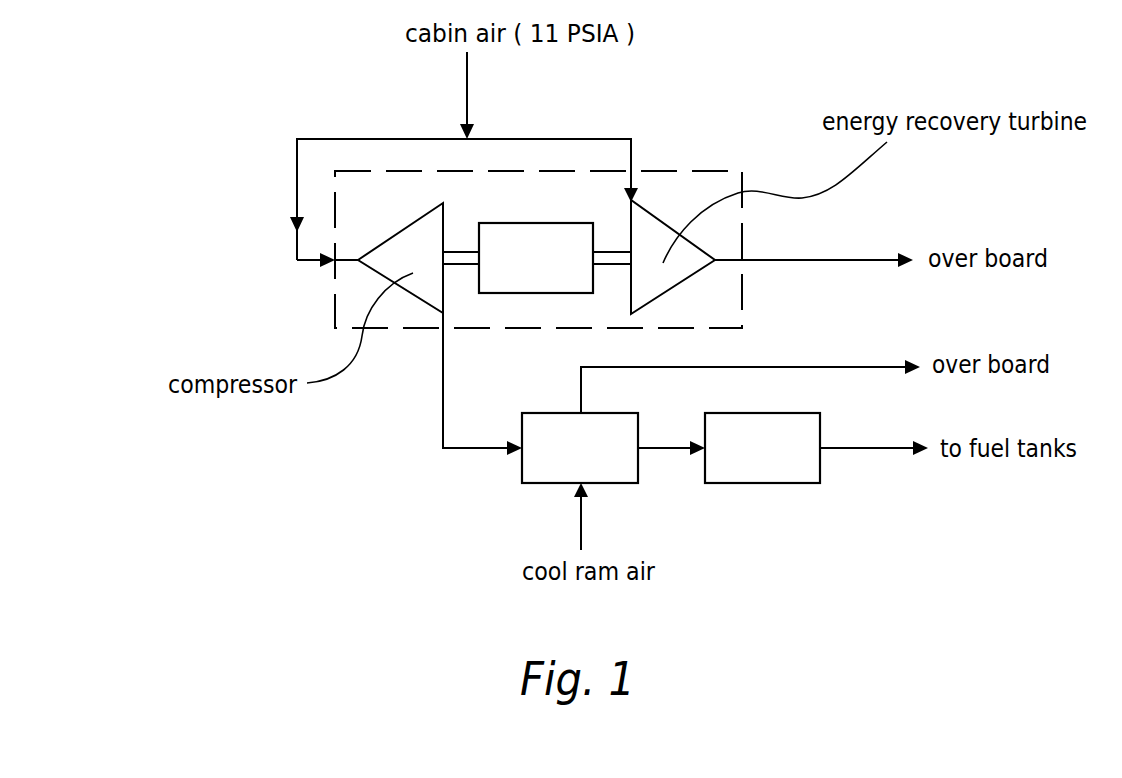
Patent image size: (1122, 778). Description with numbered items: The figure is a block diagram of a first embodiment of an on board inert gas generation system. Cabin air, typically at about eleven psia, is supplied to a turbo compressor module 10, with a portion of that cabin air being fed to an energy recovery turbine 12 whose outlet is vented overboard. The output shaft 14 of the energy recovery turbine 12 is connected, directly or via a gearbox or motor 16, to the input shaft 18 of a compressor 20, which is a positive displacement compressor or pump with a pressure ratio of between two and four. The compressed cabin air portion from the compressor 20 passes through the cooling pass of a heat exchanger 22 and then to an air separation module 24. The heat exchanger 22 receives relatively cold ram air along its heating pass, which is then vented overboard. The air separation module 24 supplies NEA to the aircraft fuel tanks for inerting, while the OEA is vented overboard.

The turbo compressor module 10 is at (335, 193).
The energy recovery turbine 12 is at (682, 273).
The output shaft 14 is at (608, 251).
The motor 16 is at (527, 293).
The input shaft 18 is at (467, 251).
The compressor 20 is at (377, 243).
The heat exchanger 22 is at (618, 478).
The air separation module 24 is at (763, 483).